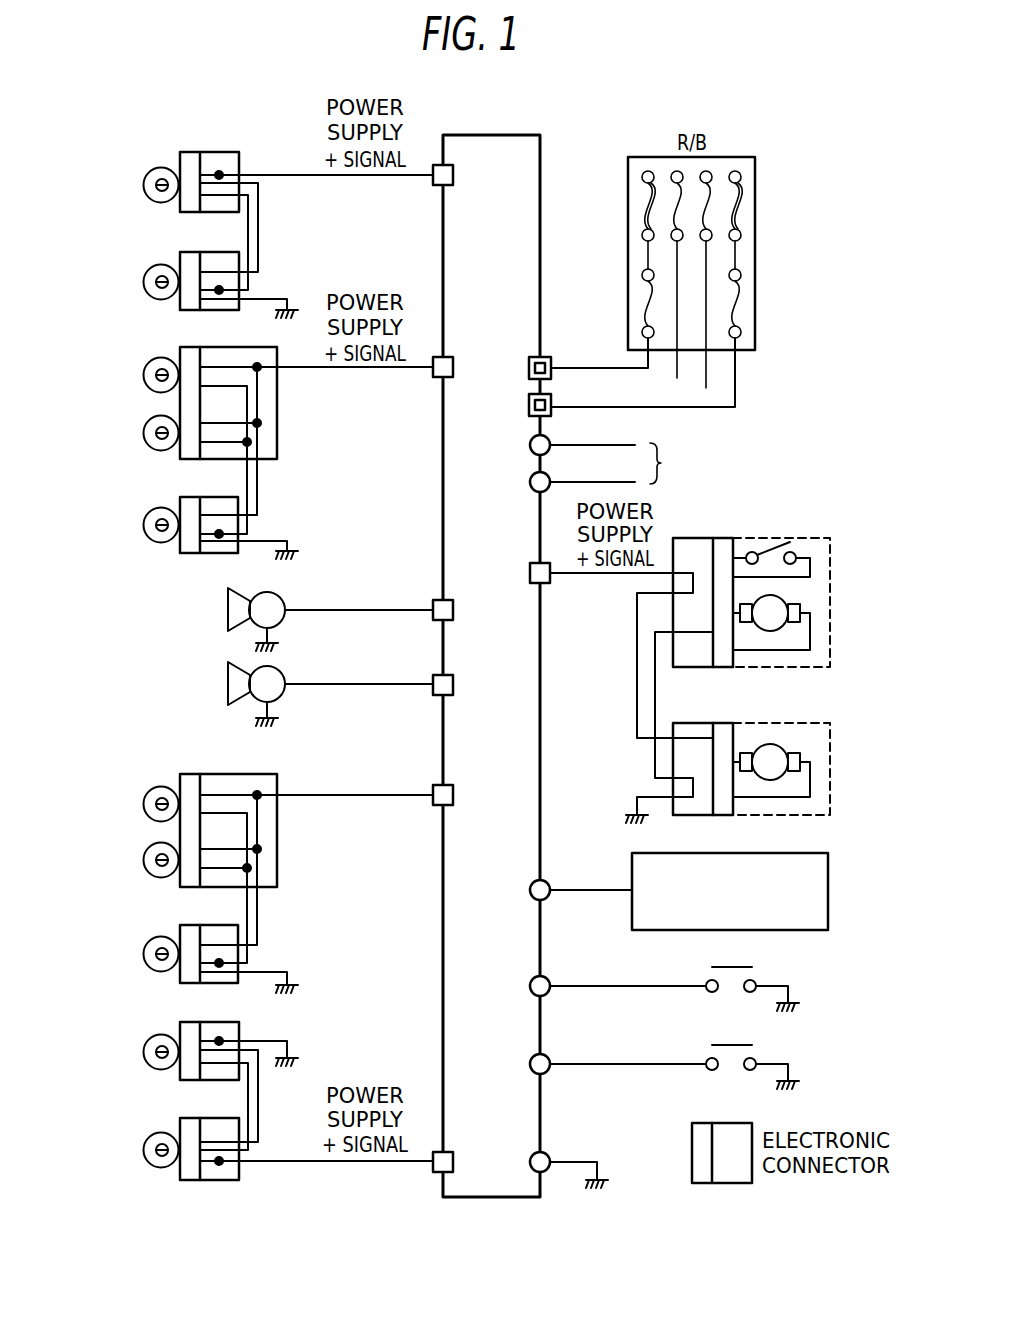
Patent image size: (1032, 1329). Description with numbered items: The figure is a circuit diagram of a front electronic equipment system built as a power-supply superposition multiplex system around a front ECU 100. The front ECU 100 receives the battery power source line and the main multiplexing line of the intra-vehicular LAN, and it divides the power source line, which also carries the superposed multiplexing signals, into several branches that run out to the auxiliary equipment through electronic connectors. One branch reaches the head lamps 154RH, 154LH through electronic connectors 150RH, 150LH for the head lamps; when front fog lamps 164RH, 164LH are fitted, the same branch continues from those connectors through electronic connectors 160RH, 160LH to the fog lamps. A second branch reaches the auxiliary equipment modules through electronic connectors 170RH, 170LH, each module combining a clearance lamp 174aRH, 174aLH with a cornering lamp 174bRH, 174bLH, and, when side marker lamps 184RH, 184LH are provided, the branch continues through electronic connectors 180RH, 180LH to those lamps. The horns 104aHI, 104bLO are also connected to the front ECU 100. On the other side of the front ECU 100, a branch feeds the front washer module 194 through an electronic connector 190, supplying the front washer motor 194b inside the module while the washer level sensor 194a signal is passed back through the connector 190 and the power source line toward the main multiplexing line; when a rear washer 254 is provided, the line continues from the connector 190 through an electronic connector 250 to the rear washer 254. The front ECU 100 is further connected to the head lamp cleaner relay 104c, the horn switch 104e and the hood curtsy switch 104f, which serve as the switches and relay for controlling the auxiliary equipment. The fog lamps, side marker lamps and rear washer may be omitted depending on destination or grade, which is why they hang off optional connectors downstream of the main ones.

The front ECU 100 is at (542, 256).
The electronic connector for head lamp 150RH is at (220, 152).
The head lamp 154RH is at (143, 186).
The electronic connector for front fog lamp 160RH is at (205, 252).
The front fog lamp 164RH is at (143, 283).
The electronic connector for auxiliary equipment module 170RH is at (278, 402).
The clearance lamp 174aRH is at (143, 376).
The cornering lamp 174bRH is at (143, 434).
The electronic connector for side marker lamp 180RH is at (207, 497).
The side marker lamp 184RH is at (143, 526).
The horn 104aHI is at (227, 609).
The horn 104bLO is at (227, 683).
The electronic connector for auxiliary equipment module 170LH is at (225, 774).
The clearance lamp 174aLH is at (143, 805).
The cornering lamp 174bLH is at (143, 861).
The electronic connector for side marker lamp 180LH is at (205, 925).
The side marker lamp 184LH is at (143, 955).
The electronic connector for front fog lamp 160LH is at (205, 1022).
The front fog lamp 164LH is at (143, 1053).
The electronic connector for head lamp 150LH is at (205, 1118).
The head lamp 154LH is at (143, 1151).
The electronic connector for front washer module 190 is at (700, 538).
The front washer module 194 is at (815, 598).
The washer level sensor 194a is at (826, 552).
The front washer motor 194b is at (826, 600).
The electronic connector for rear washer 250 is at (700, 723).
The rear washer 254 is at (826, 745).
The head lamp cleaner relay 104c is at (829, 890).
The horn switch 104e is at (756, 975).
The hood curtsy switch 104f is at (756, 1053).